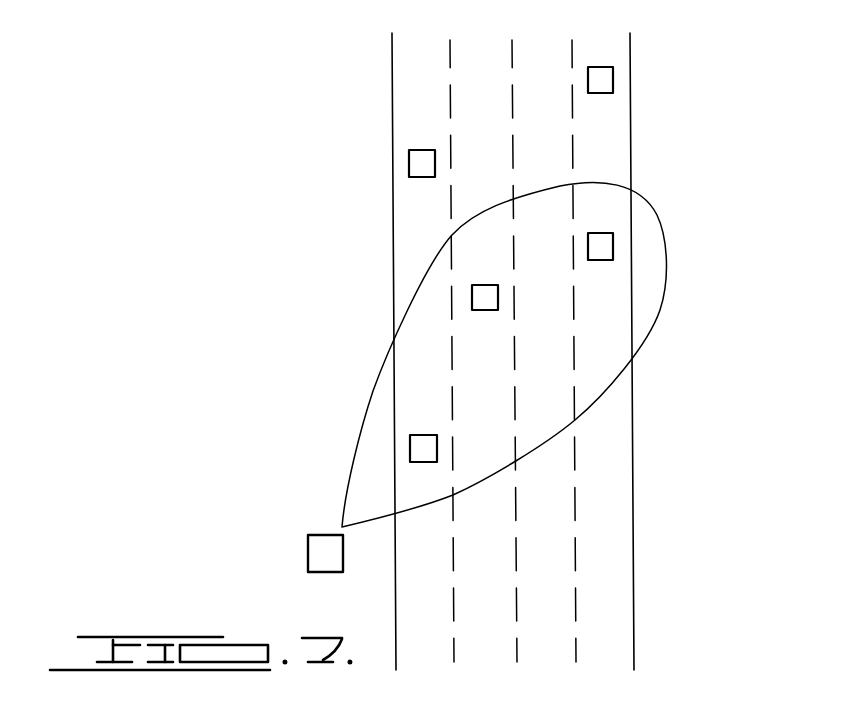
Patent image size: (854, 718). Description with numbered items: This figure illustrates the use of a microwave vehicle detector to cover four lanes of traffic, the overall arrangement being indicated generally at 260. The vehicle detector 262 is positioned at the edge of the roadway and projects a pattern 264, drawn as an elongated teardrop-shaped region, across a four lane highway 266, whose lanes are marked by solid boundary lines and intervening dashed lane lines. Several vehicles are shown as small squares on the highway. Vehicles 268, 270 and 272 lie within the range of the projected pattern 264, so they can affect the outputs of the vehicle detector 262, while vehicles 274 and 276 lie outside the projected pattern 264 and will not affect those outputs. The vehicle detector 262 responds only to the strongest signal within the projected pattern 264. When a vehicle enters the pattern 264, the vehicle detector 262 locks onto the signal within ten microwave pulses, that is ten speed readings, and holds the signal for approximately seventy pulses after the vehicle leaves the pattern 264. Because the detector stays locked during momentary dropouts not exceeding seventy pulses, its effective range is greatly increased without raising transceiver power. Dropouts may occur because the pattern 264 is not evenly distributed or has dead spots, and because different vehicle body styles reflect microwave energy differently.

The signal constellation diagram 260 is at (263, 170).
The vehicle detector 262 is at (308, 544).
The projected pattern 264 is at (372, 392).
The four lane highway 266 is at (401, 95).
The vehicle 268 is at (423, 435).
The vehicle 270 is at (487, 311).
The vehicle 272 is at (613, 248).
The vehicle 274 is at (409, 163).
The vehicle 276 is at (613, 80).